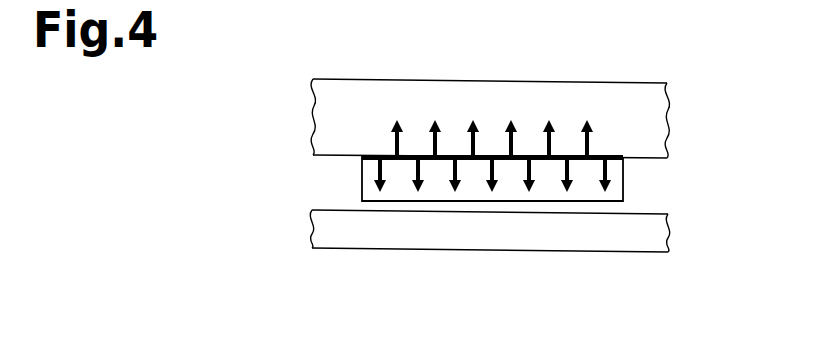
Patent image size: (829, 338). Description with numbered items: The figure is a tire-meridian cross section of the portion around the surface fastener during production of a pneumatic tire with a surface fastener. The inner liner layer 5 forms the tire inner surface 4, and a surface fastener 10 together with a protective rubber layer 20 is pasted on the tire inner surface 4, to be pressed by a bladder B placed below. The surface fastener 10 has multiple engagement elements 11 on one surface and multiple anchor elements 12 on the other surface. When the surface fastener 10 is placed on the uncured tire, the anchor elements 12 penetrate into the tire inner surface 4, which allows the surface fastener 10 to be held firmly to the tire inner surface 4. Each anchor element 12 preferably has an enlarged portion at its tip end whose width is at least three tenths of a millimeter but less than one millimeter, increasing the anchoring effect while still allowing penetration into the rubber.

The tire inner surface 4 is at (337, 156).
The inner liner layer 5 is at (653, 117).
The surface fastener 10 is at (536, 154).
The engagement element 11 is at (414, 171).
The anchor element 12 is at (395, 141).
The protective rubber layer 20 is at (615, 177).
The bladder B is at (658, 230).